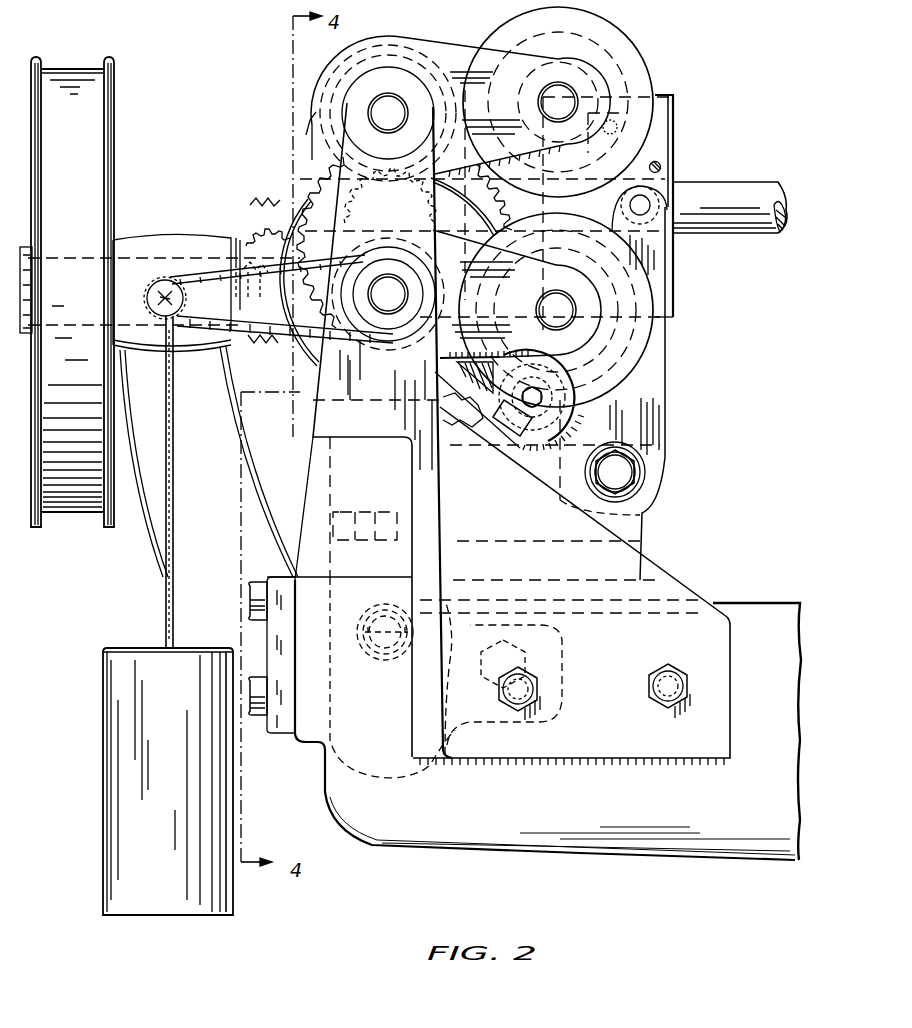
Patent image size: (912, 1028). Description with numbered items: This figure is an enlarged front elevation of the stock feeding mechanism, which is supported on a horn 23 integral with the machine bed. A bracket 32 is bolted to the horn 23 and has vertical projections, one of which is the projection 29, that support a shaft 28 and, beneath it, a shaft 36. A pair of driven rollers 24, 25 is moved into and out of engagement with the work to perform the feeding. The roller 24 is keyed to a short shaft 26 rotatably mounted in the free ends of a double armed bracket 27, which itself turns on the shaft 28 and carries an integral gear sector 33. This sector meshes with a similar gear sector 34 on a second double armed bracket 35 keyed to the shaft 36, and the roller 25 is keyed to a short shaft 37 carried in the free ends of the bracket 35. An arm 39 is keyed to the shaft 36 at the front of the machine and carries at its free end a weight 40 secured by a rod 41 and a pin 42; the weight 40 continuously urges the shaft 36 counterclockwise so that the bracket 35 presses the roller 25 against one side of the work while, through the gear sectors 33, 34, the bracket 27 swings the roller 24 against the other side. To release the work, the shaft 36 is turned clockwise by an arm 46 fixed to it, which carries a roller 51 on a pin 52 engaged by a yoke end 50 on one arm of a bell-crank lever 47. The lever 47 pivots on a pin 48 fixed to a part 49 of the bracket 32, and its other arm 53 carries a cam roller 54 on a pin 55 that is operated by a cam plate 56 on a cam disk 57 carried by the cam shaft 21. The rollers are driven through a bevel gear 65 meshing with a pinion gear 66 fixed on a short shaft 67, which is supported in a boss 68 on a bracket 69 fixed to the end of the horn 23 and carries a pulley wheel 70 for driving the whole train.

The cam shaft 21 is at (748, 192).
The horn 23 is at (654, 852).
The driven roller 24 is at (638, 78).
The driven roller 25 is at (632, 352).
The short shaft 26 is at (576, 94).
The double armed bracket 27 is at (440, 64).
The shaft 28 is at (388, 105).
The vertical projection 29 is at (358, 92).
The bracket 32 is at (672, 588).
The gear sector 33 is at (300, 126).
The gear sector 34 is at (300, 340).
The double armed bracket 35 is at (585, 330).
The shaft 36 is at (395, 305).
The short shaft 37 is at (576, 302).
The arm 39 is at (208, 280).
The weight 40 is at (118, 867).
The rod 41 is at (165, 592).
The pin 42 is at (162, 290).
The arm 46 is at (447, 410).
The bell-crank lever 47 is at (640, 395).
The pin 48 is at (620, 472).
The part 49 is at (645, 520).
The yoke end 50 is at (513, 432).
The roller 51 is at (476, 405).
The pin 52 is at (538, 412).
The arm 53 is at (660, 270).
The cam roller 54 is at (660, 247).
The pin 55 is at (641, 205).
The cam plate 56 is at (662, 133).
The cam disk 57 is at (676, 102).
The bevel gear 65 is at (285, 220).
The pinion gear 66 is at (256, 240).
The short shaft 67 is at (25, 262).
The boss 68 is at (178, 242).
The bracket 69 is at (155, 515).
The pulley wheel 70 is at (67, 70).